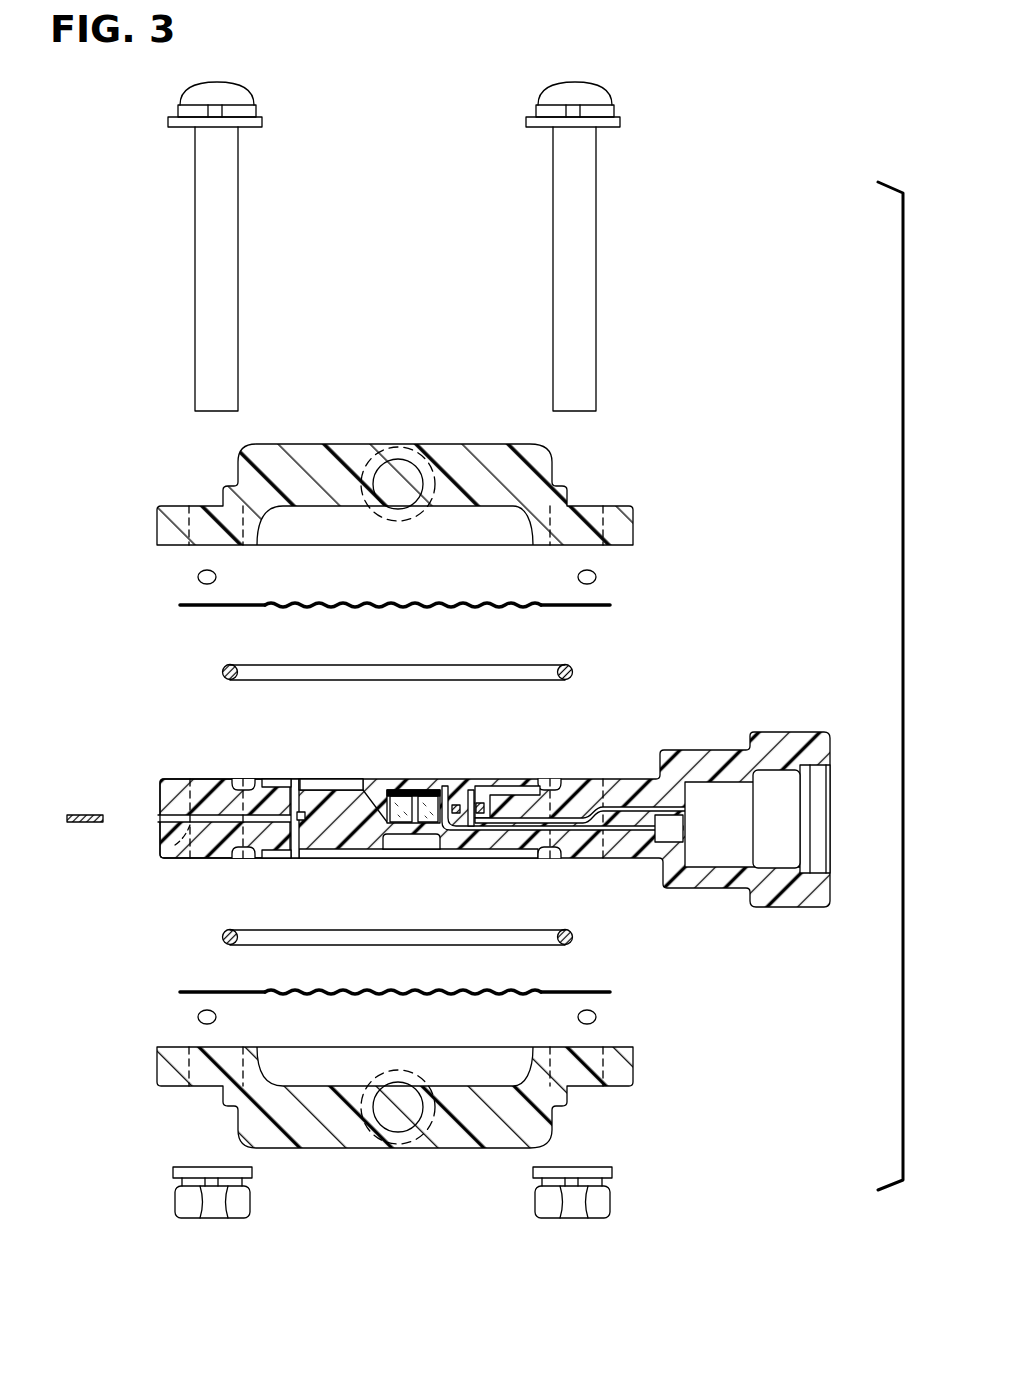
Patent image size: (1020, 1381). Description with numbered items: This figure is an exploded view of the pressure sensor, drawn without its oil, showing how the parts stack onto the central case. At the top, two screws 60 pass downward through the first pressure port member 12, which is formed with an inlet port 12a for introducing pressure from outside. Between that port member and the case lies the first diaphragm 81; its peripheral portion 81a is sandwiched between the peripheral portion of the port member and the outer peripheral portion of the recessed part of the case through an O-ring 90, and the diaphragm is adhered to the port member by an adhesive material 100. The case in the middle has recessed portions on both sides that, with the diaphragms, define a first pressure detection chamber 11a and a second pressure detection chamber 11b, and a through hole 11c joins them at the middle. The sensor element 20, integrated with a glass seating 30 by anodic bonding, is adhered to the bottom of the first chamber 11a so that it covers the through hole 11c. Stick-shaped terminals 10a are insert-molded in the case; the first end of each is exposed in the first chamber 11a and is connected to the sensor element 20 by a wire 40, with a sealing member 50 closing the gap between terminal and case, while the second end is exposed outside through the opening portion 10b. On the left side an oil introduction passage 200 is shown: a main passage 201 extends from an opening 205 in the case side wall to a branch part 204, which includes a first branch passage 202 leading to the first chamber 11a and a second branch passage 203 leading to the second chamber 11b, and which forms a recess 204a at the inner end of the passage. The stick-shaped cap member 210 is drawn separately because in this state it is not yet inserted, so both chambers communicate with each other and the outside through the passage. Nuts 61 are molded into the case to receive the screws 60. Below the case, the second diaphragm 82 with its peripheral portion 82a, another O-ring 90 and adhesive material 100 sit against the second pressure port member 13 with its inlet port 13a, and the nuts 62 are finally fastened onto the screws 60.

The screw 60 is at (205, 190).
The first pressure port member 12 is at (540, 468).
The inlet port 12a is at (425, 455).
The adhesive material 100 is at (597, 577).
The first diaphragm 81 is at (605, 606).
The peripheral portion of first diaphragm 81a is at (180, 605).
The O-ring 90 is at (230, 672).
The oil introduction passage 200 is at (178, 810).
The main passage 201 is at (212, 818).
The first branch passage 202 is at (292, 785).
The second branch passage 203 is at (293, 855).
The branch part 204 is at (295, 850).
The recess 204a is at (327, 779).
The opening 205 is at (160, 818).
The cap member 210 is at (87, 815).
The nut 61 is at (607, 779).
The first pressure detection chamber 11a is at (347, 780).
The second pressure detection chamber 11b is at (375, 850).
The through hole 11c is at (407, 850).
The sensor element 20 is at (407, 790).
The seating 30 is at (386, 790).
The wire 40 is at (449, 786).
The sealing member 50 is at (479, 790).
The terminal 10a is at (638, 830).
The opening portion 10b is at (730, 850).
The second diaphragm 82 is at (578, 992).
The peripheral portion of second diaphragm 82a is at (180, 992).
The second pressure port member 13 is at (540, 1120).
The inlet port 13a is at (425, 1140).
The nut 62 is at (185, 1200).